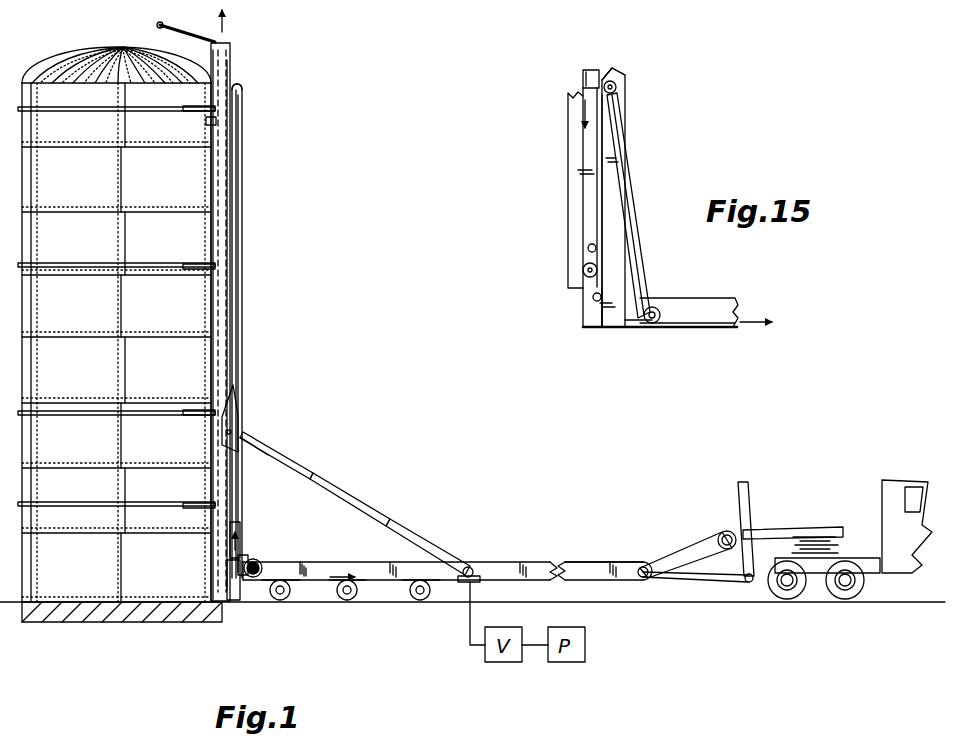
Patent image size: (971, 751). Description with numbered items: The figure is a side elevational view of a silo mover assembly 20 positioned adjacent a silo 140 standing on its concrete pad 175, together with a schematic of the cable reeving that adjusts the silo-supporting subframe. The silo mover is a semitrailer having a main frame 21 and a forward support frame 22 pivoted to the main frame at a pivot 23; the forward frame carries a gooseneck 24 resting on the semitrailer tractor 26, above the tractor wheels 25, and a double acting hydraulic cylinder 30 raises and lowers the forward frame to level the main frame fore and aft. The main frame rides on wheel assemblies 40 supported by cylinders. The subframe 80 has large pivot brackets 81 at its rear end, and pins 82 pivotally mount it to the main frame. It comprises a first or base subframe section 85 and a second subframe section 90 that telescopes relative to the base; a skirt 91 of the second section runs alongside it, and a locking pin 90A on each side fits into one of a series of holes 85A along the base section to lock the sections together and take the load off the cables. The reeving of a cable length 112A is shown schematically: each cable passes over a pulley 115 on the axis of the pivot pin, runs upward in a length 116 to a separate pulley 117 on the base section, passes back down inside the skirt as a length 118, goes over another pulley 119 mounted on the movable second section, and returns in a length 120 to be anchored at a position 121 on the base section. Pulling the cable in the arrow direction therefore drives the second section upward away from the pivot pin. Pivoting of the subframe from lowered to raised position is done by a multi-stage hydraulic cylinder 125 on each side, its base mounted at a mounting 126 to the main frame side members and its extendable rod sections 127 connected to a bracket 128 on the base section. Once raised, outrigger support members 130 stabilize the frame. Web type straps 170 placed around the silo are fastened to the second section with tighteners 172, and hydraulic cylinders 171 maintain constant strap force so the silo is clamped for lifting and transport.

In FIG. 1, the silo mover assembly 20 is at (517, 552).
In FIG. 1, the main frame 21 is at (600, 584).
In FIG. 1, the forward support frame 22 is at (692, 545).
In FIG. 1, the pivot 23 is at (644, 578).
In FIG. 1, the gooseneck 24 is at (780, 526).
In FIG. 1, the trailer wheels 25 is at (816, 590).
In FIG. 1, the semitrailer tractor 26 is at (885, 478).
In FIG. 1, the double acting hydraulic cylinder 30 is at (540, 566).
In FIG. 15, the double acting hydraulic cylinder 30 is at (685, 330).
In FIG. 1, the wheel assemblies 40 is at (400, 592).
In FIG. 1, the subframe 80 is at (246, 262).
In FIG. 1, the pivot brackets 81 is at (248, 562).
In FIG. 15, the pivot brackets 81 is at (628, 330).
In FIG. 1, the pins 82 is at (248, 582).
In FIG. 1, the first subframe section 85 is at (243, 130).
In FIG. 15, the first subframe section 85 is at (626, 80).
In FIG. 15, the holes 85A is at (614, 68).
In FIG. 1, the second subframe section 90 is at (235, 55).
In FIG. 15, the locking pin 90A is at (590, 244).
In FIG. 15, the skirt 91 is at (566, 212).
In FIG. 1, the cable length 112A is at (300, 582).
In FIG. 15, the cable length 112A is at (692, 322).
In FIG. 1, the pulley 115 is at (262, 565).
In FIG. 15, the pulley 115 is at (645, 300).
In FIG. 1, the cable length 116 is at (238, 358).
In FIG. 15, the cable length 116 is at (620, 125).
In FIG. 1, the pulley 117 is at (242, 92).
In FIG. 15, the pulley 117 is at (616, 88).
In FIG. 1, the cable length 118 is at (228, 192).
In FIG. 15, the cable length 118 is at (605, 190).
In FIG. 15, the pulley 119 is at (568, 272).
In FIG. 1, the cable length 120 is at (215, 297).
In FIG. 15, the cable length 120 is at (582, 147).
In FIG. 1, the anchor 121 is at (206, 124).
In FIG. 15, the anchor 121 is at (583, 72).
In FIG. 1, the multi-stage hydraulic cylinder 125 is at (452, 555).
In FIG. 1, the base mounting 126 is at (472, 582).
In FIG. 1, the extendable rod sections 127 is at (322, 478).
In FIG. 1, the bracket 128 is at (232, 432).
In FIG. 1, the outrigger support members 130 is at (232, 602).
In FIG. 1, the silo 140 is at (75, 95).
In FIG. 1, the web type straps 170 is at (64, 112).
In FIG. 1, the hydraulic cylinders 171 is at (212, 106).
In FIG. 1, the tighteners 172 is at (195, 262).
In FIG. 1, the concrete pad 175 is at (166, 622).